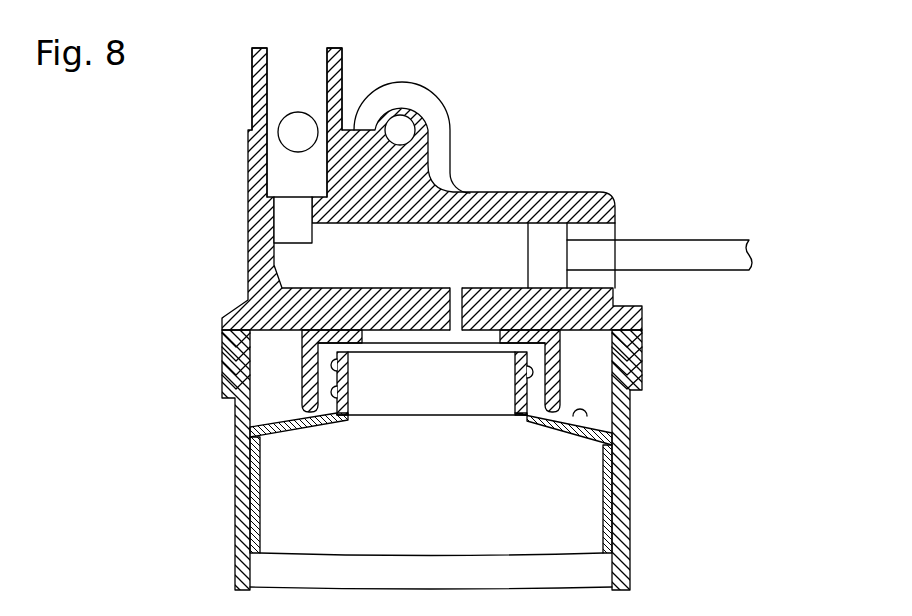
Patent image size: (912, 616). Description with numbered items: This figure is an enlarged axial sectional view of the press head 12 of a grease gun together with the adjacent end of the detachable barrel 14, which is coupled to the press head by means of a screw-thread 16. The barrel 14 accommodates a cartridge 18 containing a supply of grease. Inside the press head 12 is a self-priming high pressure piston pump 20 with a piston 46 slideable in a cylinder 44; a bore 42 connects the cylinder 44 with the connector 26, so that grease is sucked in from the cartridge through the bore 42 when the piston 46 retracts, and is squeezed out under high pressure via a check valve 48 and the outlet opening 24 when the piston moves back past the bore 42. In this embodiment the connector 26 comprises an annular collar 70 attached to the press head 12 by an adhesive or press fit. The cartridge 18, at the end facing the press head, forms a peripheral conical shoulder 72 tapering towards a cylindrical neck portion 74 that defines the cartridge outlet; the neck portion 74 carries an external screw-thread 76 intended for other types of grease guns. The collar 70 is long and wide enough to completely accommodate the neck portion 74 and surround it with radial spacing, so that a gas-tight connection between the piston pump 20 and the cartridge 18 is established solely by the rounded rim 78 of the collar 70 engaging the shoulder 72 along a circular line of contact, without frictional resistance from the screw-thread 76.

The press head 12 is at (176, 188).
The barrel 14 is at (238, 535).
The screw-thread 16 is at (233, 358).
The cartridge 18 is at (628, 530).
The high pressure piston pump 20 is at (591, 181).
The outlet opening 24 is at (345, 75).
The connector 26 is at (293, 354).
The bore 42 is at (455, 300).
The cylinder 44 is at (282, 260).
The piston 46 is at (545, 235).
The check valve 48 is at (298, 130).
The annular collar 70 is at (560, 358).
The conical shoulder 72 is at (575, 423).
The neck portion 74 is at (513, 392).
The external screw-thread 76 is at (325, 397).
The rounded rim 78 is at (560, 398).